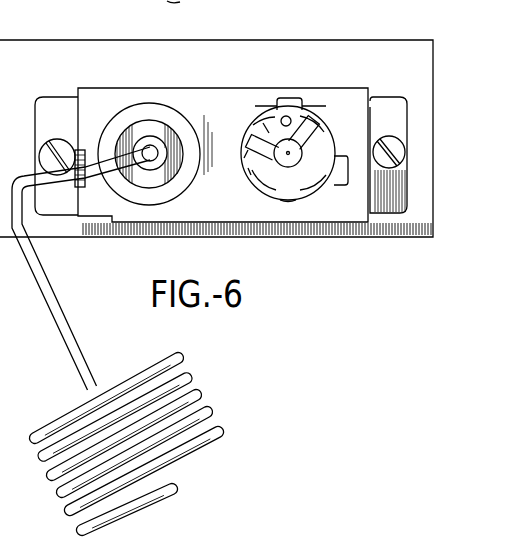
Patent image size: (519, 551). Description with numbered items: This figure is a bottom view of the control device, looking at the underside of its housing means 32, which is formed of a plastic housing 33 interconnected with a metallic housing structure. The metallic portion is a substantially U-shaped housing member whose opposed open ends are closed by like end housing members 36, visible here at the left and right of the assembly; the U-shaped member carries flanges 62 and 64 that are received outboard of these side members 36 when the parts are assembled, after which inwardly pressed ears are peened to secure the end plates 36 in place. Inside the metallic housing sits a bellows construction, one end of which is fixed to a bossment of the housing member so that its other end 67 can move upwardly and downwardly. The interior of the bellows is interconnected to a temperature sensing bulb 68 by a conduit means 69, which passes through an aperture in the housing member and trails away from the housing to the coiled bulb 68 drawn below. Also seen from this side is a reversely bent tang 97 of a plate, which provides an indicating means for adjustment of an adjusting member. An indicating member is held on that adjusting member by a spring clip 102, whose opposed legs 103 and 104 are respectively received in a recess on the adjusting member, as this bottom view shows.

The housing means 32 is at (38, 40).
The plastic housing 33 is at (122, 40).
The housing members 36 is at (78, 110).
The flange 62 is at (372, 135).
The flange 64 is at (39, 148).
The other end of the bellows construction 67 is at (143, 203).
The temperature sensing bulb 68 is at (180, 490).
The conduit means 69 is at (213, 411).
The reversely bent tang 97 is at (297, 99).
The spring clip 102 is at (254, 130).
The leg 103 is at (247, 160).
The leg 104 is at (287, 207).